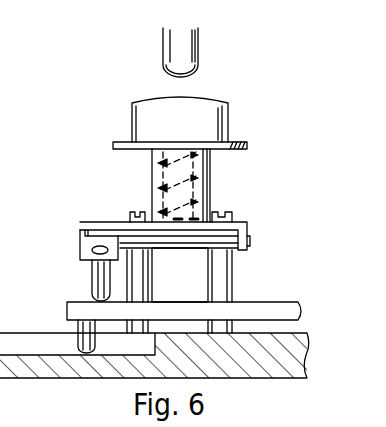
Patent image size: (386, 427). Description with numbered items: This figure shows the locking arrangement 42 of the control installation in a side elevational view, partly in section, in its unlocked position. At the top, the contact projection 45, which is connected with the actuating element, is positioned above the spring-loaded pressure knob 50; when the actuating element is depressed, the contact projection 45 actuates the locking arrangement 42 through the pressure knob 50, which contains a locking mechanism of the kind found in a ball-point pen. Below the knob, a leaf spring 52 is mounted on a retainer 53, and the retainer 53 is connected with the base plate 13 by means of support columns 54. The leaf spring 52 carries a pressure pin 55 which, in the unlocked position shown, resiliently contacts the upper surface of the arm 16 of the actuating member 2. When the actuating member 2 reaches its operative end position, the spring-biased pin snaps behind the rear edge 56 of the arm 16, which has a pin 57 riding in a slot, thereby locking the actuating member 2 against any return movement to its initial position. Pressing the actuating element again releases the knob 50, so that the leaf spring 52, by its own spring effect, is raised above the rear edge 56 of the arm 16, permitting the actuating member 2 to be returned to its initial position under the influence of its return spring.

The actuating member 2 is at (277, 302).
The base plate 13 is at (305, 335).
The arm 16 is at (250, 308).
The locking arrangement 42 is at (115, 108).
The contact projection 45 is at (185, 53).
The pressure knob 50 is at (221, 120).
The leaf spring 52 is at (80, 253).
The retainer 53 is at (250, 236).
The support columns 54 is at (212, 278).
The pressure pin 55 is at (92, 284).
The rear edge 56 is at (68, 311).
The pin 57 is at (86, 347).